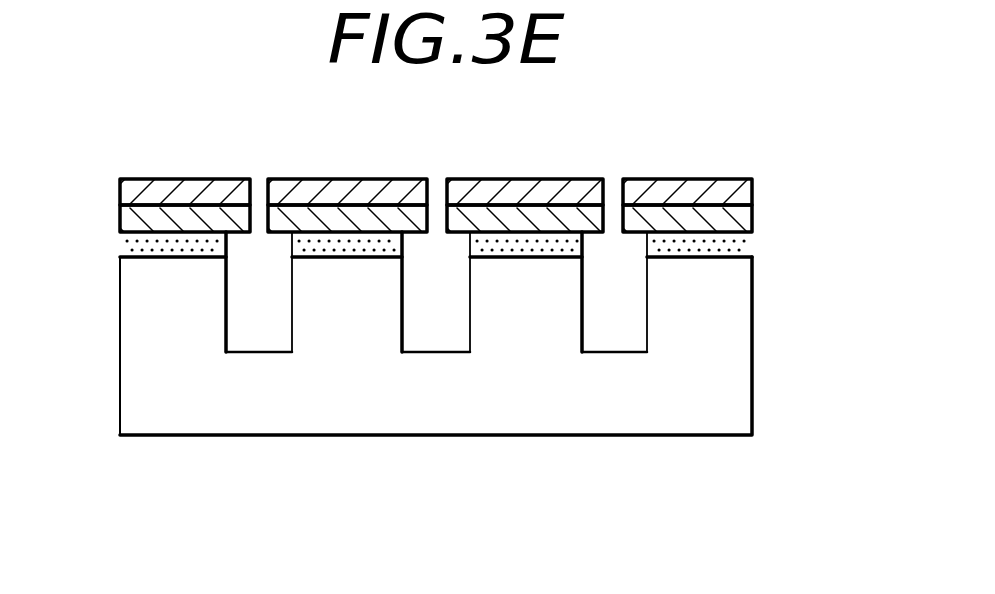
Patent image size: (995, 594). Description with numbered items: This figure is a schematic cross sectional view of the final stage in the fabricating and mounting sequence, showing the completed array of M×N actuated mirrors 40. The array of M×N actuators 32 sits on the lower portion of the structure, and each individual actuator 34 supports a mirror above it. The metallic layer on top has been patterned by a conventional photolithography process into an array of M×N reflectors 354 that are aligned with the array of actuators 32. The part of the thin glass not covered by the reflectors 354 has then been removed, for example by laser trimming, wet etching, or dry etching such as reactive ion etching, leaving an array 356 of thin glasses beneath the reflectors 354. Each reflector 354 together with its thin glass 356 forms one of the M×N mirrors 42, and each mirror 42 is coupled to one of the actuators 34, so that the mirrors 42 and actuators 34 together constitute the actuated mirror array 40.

The array of M×N actuators 32 is at (772, 263).
The actuator 34 is at (508, 377).
The array of M×N actuated mirrors 40 is at (108, 182).
The mirror 42 is at (763, 182).
The reflector 354 is at (660, 192).
The array of thin glasses 356 is at (450, 223).